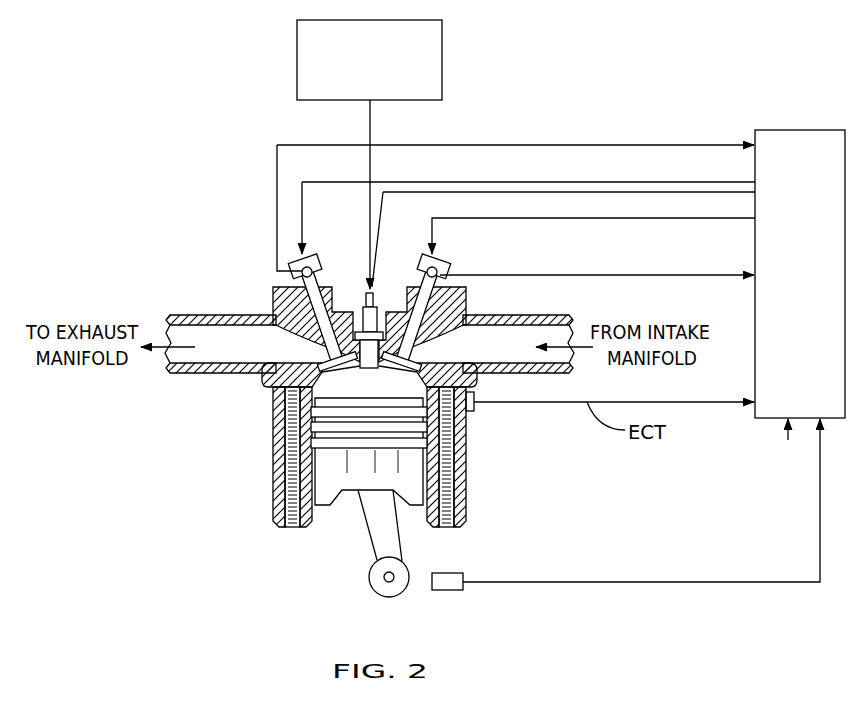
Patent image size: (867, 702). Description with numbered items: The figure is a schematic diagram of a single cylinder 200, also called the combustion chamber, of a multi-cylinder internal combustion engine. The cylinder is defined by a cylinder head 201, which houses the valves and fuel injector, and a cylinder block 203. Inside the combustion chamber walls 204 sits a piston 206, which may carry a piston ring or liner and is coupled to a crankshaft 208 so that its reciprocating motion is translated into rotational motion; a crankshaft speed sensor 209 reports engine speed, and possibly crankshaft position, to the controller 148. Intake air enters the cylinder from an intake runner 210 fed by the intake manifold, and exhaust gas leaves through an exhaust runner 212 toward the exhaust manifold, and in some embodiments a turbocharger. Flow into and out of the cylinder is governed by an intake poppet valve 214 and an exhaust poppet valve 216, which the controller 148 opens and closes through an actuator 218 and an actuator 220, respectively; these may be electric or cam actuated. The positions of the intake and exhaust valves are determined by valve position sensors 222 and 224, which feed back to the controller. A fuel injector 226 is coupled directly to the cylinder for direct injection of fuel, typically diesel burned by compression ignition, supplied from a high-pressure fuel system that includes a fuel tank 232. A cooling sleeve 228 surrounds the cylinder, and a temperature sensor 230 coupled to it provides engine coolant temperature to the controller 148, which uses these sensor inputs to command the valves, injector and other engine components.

The controller 148 is at (782, 283).
The fuel tank 232 is at (352, 69).
The cylinder 200 is at (350, 396).
The cylinder head 201 is at (221, 251).
The cylinder block 203 is at (512, 475).
The combustion chamber walls 204 is at (317, 512).
The piston 206 is at (353, 477).
The crankshaft 208 is at (370, 573).
The crankshaft speed sensor 209 is at (457, 590).
The intake runner 210 is at (473, 358).
The exhaust runner 212 is at (239, 358).
The intake poppet valve 214 is at (433, 337).
The exhaust poppet valve 216 is at (320, 343).
The actuator 218 is at (427, 262).
The actuator 220 is at (313, 258).
The valve position sensor 222 is at (443, 275).
The valve position sensor 224 is at (300, 273).
The fuel injector 226 is at (365, 307).
The cooling sleeve 228 is at (445, 478).
The temperature sensor 230 is at (471, 412).